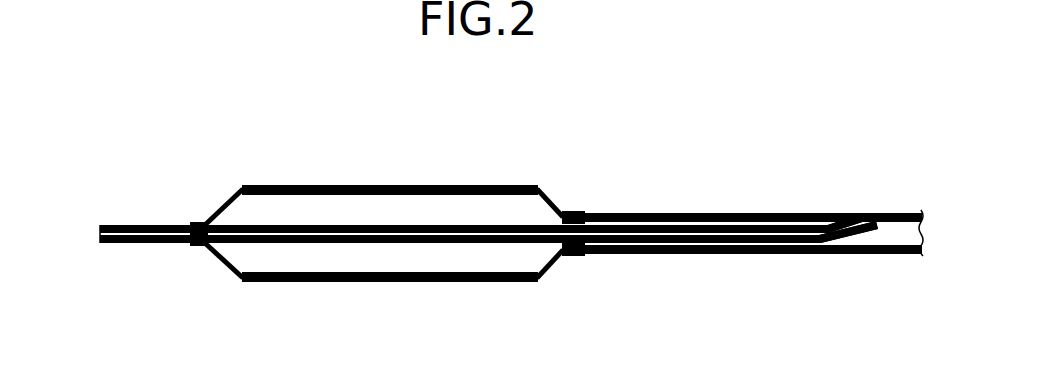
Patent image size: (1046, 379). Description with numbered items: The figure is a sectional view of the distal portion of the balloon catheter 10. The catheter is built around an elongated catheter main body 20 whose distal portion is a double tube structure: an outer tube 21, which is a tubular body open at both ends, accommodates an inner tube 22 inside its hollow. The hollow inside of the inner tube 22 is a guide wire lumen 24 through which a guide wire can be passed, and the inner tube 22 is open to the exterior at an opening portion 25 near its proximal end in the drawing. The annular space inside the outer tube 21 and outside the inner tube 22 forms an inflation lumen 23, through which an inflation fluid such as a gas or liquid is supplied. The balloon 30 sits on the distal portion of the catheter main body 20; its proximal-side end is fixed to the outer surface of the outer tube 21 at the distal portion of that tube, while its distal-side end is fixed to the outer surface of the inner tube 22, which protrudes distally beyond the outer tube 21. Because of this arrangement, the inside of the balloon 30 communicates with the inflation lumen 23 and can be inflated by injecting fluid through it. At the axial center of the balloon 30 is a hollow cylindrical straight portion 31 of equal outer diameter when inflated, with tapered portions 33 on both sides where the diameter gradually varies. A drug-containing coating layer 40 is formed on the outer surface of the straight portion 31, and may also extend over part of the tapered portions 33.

The balloon catheter 10 is at (201, 156).
The catheter main body 20 is at (717, 128).
The outer tube 21 is at (768, 214).
The inner tube 22 is at (732, 214).
The inflation lumen 23 is at (883, 247).
The guide wire lumen 24 is at (781, 244).
The opening portion 25 is at (860, 218).
The balloon 30 is at (326, 185).
The straight portion 31 is at (391, 284).
The tapered portions 33 is at (218, 258).
The coating layer 40 is at (420, 184).